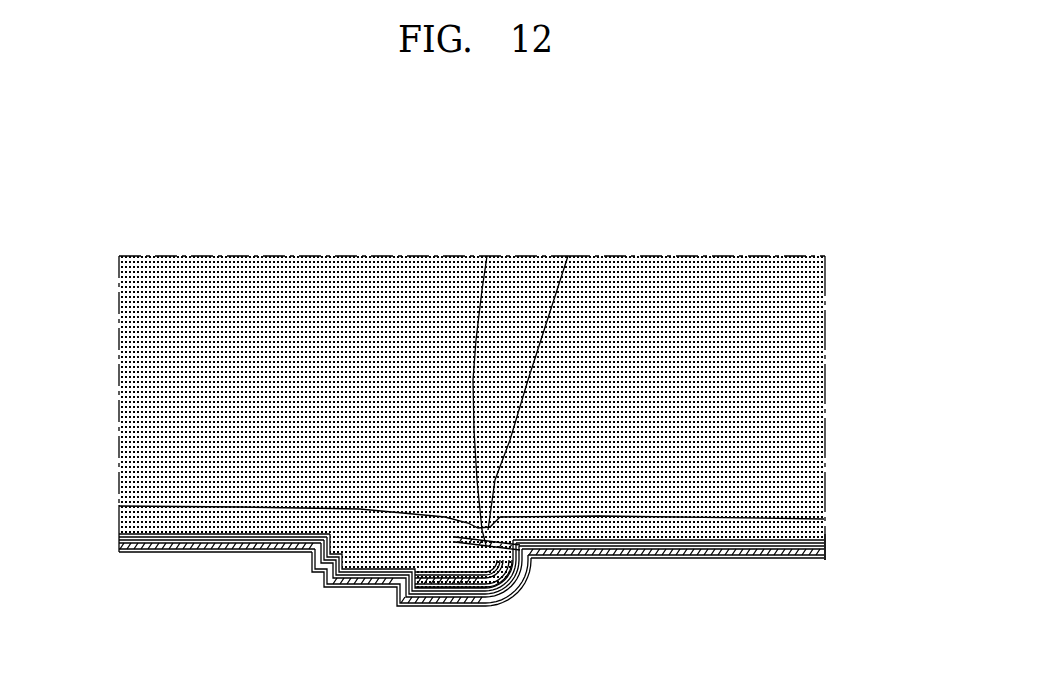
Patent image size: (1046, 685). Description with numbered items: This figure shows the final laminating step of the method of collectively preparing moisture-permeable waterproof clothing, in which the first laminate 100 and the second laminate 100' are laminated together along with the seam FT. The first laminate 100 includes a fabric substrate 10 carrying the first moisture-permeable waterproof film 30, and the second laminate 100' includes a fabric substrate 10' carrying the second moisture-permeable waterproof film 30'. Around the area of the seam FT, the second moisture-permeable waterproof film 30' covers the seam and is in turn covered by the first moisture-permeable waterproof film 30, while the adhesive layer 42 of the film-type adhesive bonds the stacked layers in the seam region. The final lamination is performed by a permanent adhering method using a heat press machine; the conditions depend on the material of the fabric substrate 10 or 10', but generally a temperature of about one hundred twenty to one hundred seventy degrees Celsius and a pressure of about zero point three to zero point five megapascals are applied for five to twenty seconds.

The fabric substrate 10 is at (343, 353).
The fabric substrate 10' is at (662, 368).
The seam FT is at (487, 256).
The first moisture-permeable waterproof film 30 is at (224, 576).
The second moisture-permeable waterproof film 30' is at (668, 581).
The adhesive layer 42 is at (545, 560).
The first laminate 100 is at (168, 581).
The second laminate 100' is at (771, 596).